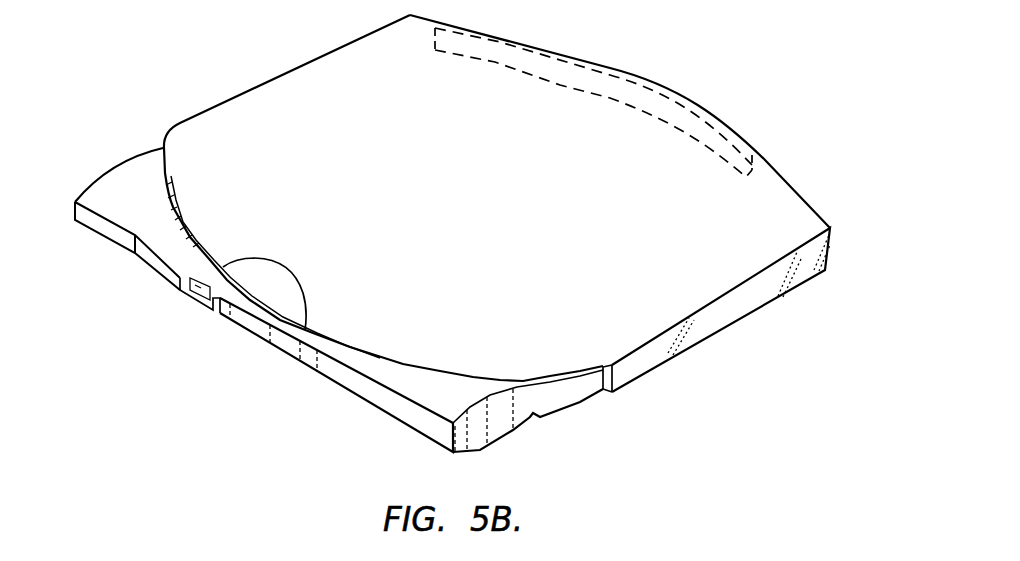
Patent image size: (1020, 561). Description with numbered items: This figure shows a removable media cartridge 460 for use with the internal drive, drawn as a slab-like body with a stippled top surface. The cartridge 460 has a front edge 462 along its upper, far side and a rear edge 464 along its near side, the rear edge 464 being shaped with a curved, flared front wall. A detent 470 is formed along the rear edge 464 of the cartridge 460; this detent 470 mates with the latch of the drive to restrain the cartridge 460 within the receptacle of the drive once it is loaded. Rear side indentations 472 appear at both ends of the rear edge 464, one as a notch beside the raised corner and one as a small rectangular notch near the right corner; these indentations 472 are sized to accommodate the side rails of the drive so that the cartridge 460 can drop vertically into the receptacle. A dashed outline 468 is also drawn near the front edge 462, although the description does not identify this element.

The cartridge 460 is at (176, 32).
The front edge 462 is at (668, 84).
The rear edge 464 is at (353, 392).
The hidden recess 468 is at (508, 42).
The detent 470 is at (192, 296).
The rear side indentations 472 is at (141, 148).